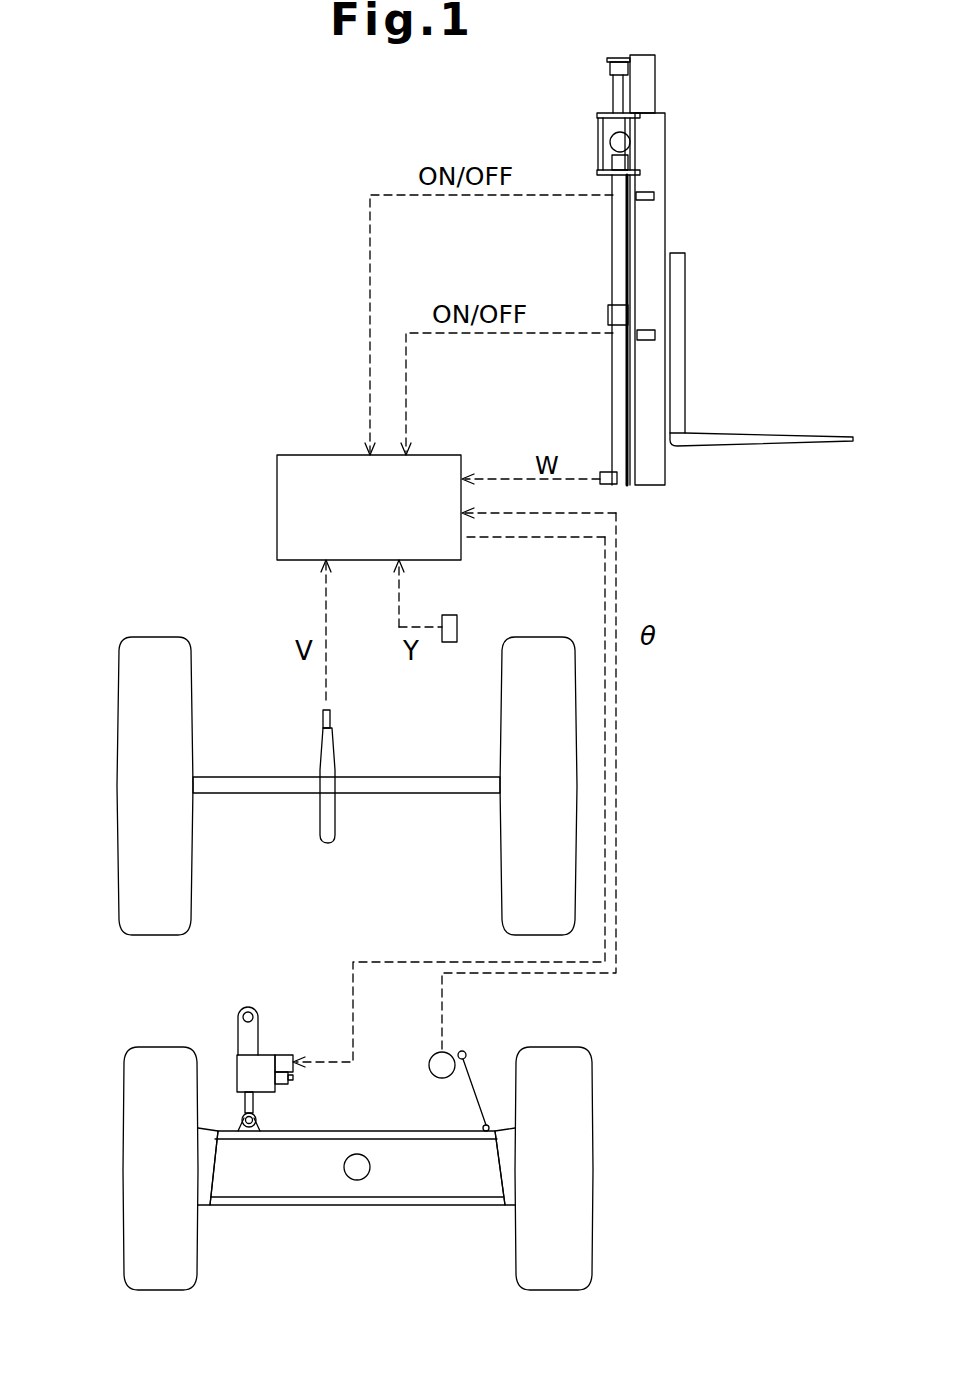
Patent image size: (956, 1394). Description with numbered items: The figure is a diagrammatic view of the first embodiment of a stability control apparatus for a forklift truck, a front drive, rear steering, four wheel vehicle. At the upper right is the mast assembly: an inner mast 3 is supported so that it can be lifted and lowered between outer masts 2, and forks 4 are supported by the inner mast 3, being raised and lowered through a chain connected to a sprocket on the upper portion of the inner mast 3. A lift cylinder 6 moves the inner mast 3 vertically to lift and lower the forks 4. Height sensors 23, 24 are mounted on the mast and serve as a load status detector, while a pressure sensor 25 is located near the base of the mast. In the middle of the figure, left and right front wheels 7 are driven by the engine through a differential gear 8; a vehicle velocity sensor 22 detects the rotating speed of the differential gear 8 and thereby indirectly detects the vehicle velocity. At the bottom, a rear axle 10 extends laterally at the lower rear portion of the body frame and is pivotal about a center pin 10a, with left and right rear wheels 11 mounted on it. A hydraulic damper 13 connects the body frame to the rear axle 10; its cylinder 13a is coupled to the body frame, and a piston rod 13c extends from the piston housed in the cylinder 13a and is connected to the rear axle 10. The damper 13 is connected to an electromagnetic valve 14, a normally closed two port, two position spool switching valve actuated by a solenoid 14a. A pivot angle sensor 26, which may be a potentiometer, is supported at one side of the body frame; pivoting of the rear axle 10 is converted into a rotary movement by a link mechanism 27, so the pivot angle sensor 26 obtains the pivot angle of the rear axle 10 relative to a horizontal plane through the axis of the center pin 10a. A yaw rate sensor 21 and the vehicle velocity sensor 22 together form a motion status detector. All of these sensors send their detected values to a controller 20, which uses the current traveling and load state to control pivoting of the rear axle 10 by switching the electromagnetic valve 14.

The outer mast 2 is at (665, 222).
The inner mast 3 is at (655, 82).
The forks 4 is at (777, 437).
The lift cylinder 6 is at (612, 272).
The front wheels 7 is at (153, 637).
The differential gear 8 is at (335, 752).
The rear axle 10 is at (418, 1205).
The center pin 10a is at (371, 1167).
The rear wheels 11 is at (122, 1172).
The hydraulic damper 13 is at (228, 1068).
The cylinder 13a is at (237, 1082).
The piston rod 13c is at (262, 1105).
The electromagnetic valve 14 is at (285, 1055).
The solenoid 14a is at (296, 1072).
The controller 20 is at (277, 486).
The yaw rate sensor 21 is at (458, 623).
The vehicle velocity sensor 22 is at (333, 720).
The height sensor 23 is at (645, 330).
The height sensor 24 is at (646, 192).
The pressure sensor 25 is at (600, 472).
The pivot angle sensor 26 is at (430, 1056).
The link mechanism 27 is at (468, 1066).